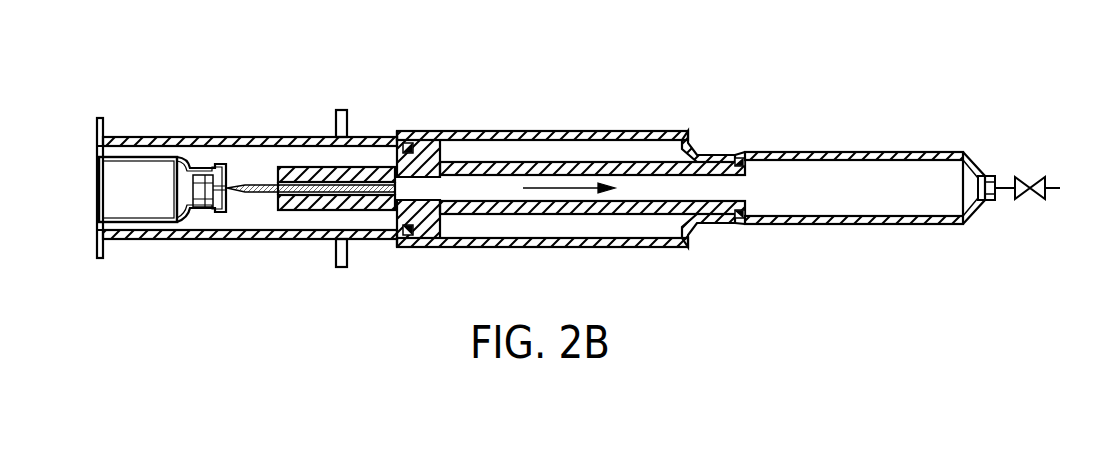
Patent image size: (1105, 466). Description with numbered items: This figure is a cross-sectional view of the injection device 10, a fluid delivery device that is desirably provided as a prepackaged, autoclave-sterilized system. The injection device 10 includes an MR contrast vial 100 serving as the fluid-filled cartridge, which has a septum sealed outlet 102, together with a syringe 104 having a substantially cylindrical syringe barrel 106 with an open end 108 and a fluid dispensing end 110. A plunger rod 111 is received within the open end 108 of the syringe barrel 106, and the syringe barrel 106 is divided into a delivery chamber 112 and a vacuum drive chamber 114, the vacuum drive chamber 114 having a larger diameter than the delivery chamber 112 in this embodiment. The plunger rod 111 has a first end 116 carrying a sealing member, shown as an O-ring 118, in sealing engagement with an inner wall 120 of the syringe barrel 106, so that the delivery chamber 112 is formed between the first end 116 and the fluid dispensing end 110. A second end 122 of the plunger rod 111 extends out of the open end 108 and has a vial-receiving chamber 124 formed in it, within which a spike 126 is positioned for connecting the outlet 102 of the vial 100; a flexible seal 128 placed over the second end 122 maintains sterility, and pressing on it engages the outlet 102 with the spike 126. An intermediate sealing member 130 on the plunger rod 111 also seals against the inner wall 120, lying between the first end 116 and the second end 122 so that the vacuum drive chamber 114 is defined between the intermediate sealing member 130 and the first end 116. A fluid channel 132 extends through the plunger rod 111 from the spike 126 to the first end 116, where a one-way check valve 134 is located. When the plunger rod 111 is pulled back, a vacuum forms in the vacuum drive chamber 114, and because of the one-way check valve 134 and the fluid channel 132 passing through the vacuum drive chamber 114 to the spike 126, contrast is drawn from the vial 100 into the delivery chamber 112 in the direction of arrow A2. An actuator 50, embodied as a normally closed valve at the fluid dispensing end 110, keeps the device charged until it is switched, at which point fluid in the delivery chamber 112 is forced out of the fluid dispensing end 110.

The injection device 10 is at (486, 72).
The actuator 50 is at (1020, 200).
The MR contrast vial 100 is at (138, 153).
The septum sealed outlet 102 is at (226, 182).
The syringe 104 is at (448, 96).
The syringe barrel 106 is at (642, 132).
The open end 108 is at (336, 116).
The fluid dispensing end 110 is at (996, 177).
The plunger rod 111 is at (558, 162).
The delivery chamber 112 is at (945, 162).
The vacuum drive chamber 114 is at (512, 152).
The first end 116 is at (746, 166).
The O-ring 118 is at (746, 168).
The inner wall 120 is at (878, 160).
The second end 122 is at (97, 130).
The vial-receiving chamber 124 is at (270, 162).
The spike 126 is at (218, 212).
The flexible seal 128 is at (97, 148).
The intermediate sealing member 130 is at (412, 245).
The fluid channel 132 is at (633, 190).
The one-way check valve 134 is at (745, 163).
The arrow A2 is at (548, 190).